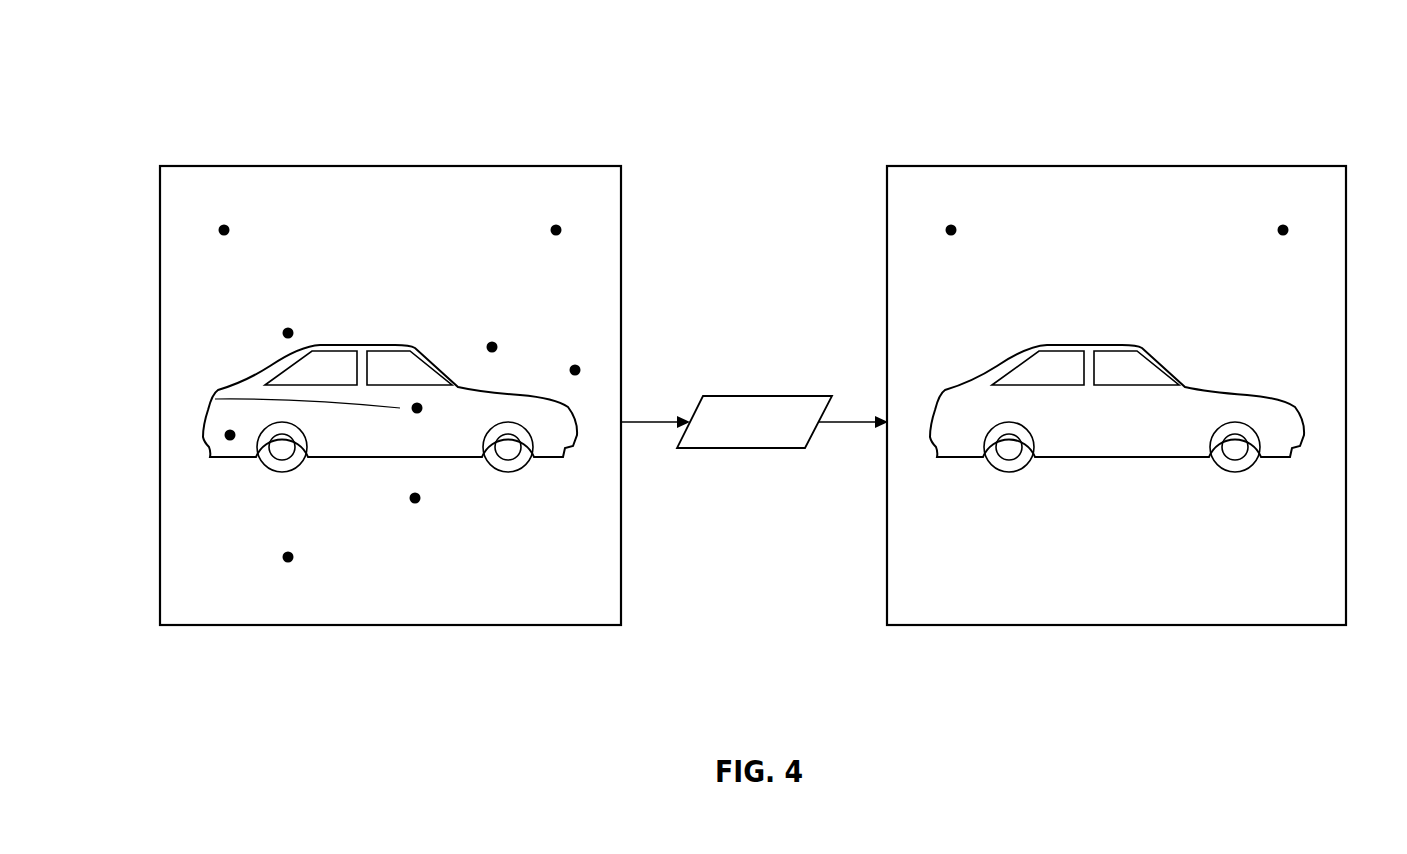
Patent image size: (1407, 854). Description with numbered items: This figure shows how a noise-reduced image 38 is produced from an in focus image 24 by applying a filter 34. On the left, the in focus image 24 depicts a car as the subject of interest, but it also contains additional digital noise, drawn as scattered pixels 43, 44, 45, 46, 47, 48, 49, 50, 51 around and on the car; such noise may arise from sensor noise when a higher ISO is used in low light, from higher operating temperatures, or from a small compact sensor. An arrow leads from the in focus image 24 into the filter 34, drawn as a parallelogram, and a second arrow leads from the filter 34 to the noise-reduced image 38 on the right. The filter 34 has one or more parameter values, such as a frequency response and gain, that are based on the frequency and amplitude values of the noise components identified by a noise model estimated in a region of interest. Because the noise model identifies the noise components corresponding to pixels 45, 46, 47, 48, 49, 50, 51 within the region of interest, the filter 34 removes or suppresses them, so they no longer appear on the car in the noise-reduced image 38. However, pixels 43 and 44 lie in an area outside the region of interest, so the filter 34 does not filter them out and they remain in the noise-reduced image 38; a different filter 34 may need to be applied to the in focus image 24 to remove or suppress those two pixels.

The in focus image 24 is at (325, 134).
The noise-reduced image 38 is at (1068, 134).
The filter 34 is at (754, 422).
The pixel 43 is at (222, 230).
The pixel 44 is at (558, 230).
The pixel 45 is at (494, 346).
The pixel 46 is at (577, 370).
The pixel 47 is at (413, 498).
The pixel 48 is at (286, 557).
The pixel 49 is at (228, 435).
The pixel 50 is at (415, 408).
The pixel 51 is at (286, 333).